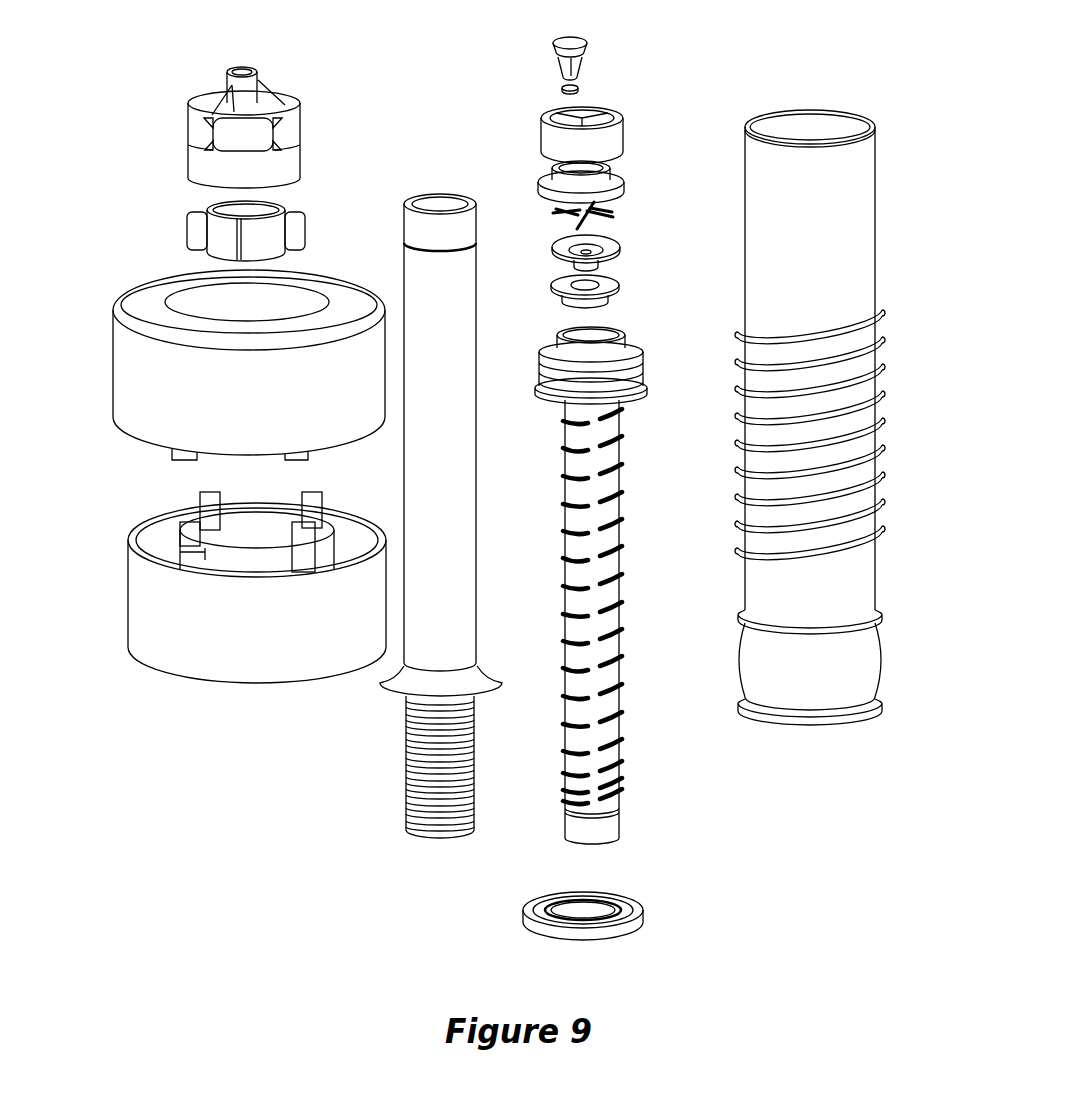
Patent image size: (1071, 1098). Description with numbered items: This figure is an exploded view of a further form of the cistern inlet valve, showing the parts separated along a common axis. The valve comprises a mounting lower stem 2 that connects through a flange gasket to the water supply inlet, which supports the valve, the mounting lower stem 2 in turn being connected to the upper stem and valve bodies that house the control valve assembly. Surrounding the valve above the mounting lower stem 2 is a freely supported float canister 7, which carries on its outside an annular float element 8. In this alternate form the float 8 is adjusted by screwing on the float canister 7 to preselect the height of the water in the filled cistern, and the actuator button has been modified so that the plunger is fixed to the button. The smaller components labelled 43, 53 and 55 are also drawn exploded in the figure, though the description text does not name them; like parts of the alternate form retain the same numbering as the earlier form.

The mounting lower stem 2 is at (463, 484).
The float canister 7 is at (860, 192).
The annular float element 8 is at (125, 393).
The dish member 43 is at (614, 246).
The pin 53 is at (588, 40).
The cross pin 55 is at (612, 212).